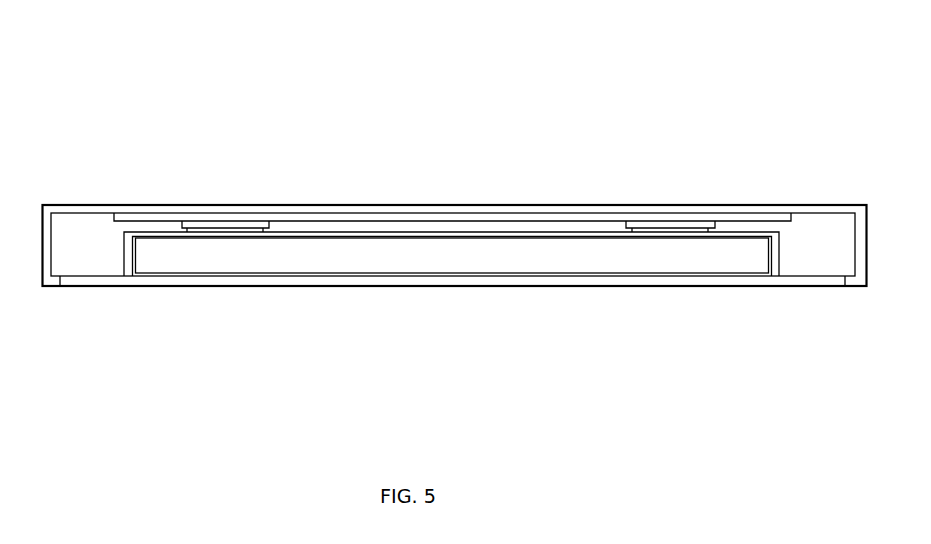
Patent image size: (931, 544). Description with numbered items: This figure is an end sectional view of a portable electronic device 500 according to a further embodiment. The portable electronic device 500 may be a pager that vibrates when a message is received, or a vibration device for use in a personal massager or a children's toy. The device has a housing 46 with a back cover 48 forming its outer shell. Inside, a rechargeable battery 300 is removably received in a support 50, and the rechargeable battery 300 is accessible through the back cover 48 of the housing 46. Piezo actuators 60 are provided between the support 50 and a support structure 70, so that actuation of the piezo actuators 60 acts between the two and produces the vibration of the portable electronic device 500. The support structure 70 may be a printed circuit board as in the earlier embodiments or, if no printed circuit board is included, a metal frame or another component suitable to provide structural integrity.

The portable electronic device 500 is at (455, 214).
The housing 46 is at (688, 213).
The back cover 48 is at (713, 286).
The support 50 is at (124, 268).
The piezo actuators 60 is at (650, 229).
The support structure 70 is at (455, 217).
The rechargeable battery 300 is at (287, 253).